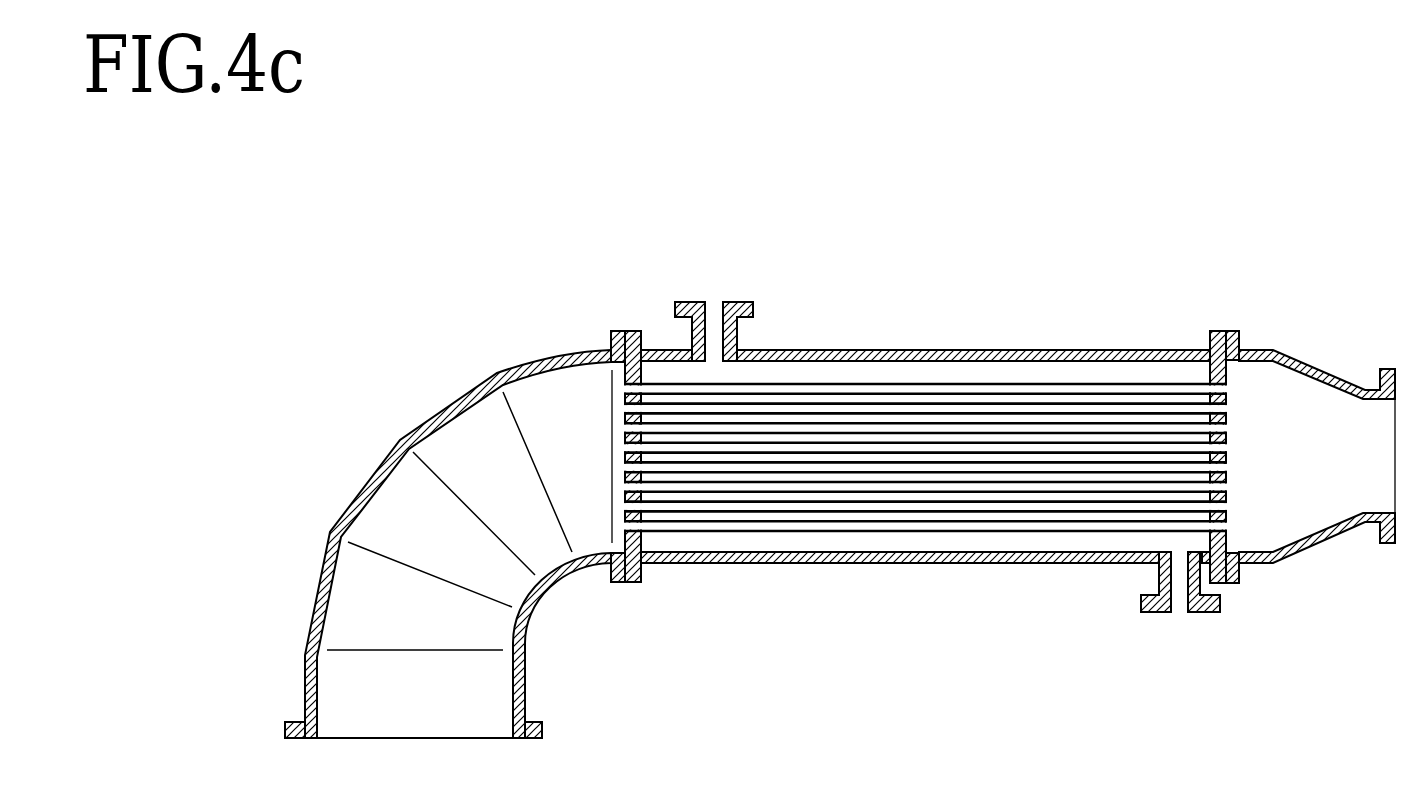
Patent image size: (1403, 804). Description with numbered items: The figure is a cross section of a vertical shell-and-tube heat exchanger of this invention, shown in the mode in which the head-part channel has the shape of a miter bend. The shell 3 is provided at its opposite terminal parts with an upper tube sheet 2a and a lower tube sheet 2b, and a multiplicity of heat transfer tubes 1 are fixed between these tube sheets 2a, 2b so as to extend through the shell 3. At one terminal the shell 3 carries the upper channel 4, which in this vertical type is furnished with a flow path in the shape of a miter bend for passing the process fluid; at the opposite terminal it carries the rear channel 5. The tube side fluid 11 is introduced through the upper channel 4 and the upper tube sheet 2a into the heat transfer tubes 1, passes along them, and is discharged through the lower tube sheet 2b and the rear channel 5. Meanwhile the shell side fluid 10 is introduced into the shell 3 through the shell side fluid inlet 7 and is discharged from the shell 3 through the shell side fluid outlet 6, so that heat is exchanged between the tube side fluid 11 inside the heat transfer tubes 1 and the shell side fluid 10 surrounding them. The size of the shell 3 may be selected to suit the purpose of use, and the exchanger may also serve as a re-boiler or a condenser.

The heat transfer tubes 1 is at (1028, 383).
The upper tube sheet 2a is at (630, 333).
The lower tube sheet 2b is at (1213, 328).
The shell 3 is at (897, 351).
The upper channel 4 is at (582, 572).
The rear channel 5 is at (1292, 350).
The shell side fluid outlet 6 is at (712, 310).
The shell side fluid inlet 7 is at (1178, 598).
The shell side fluid 10 is at (830, 375).
The tube side fluid 11 is at (575, 377).